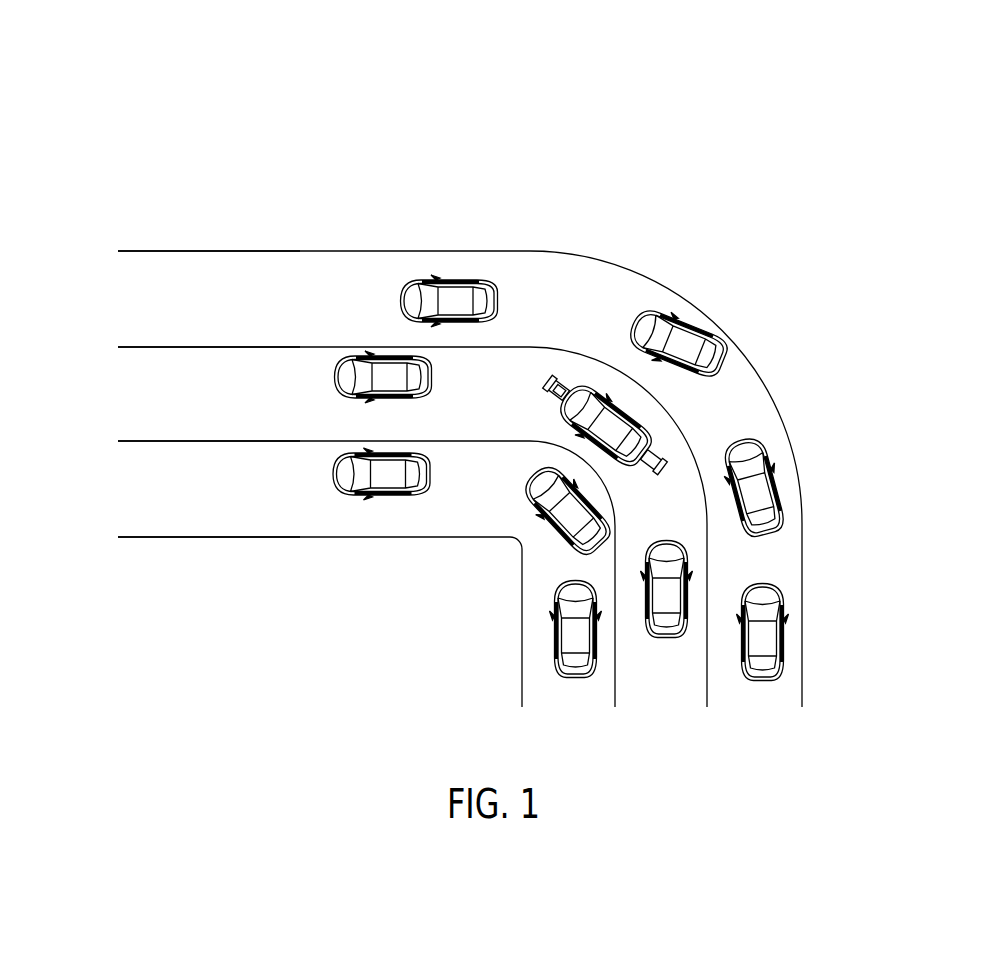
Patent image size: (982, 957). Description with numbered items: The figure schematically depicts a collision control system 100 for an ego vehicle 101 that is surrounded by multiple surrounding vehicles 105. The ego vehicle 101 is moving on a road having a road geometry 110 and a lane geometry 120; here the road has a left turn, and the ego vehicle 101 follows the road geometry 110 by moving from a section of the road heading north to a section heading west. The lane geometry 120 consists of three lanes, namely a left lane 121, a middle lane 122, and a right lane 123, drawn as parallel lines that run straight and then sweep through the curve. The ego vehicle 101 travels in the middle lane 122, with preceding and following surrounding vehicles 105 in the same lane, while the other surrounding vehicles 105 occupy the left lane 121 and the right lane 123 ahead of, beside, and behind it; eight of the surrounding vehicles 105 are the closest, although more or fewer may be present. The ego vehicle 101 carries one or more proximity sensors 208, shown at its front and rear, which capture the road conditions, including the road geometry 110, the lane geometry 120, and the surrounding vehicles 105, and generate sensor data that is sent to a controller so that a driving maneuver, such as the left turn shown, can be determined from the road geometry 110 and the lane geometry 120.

The collision control system 100 is at (774, 108).
The ego vehicle 101 is at (564, 390).
The surrounding vehicles 105 is at (400, 301).
The road geometry 110 is at (779, 330).
The lane geometry 120 is at (97, 357).
The left lane 121 is at (198, 511).
The middle lane 122 is at (195, 411).
The right lane 123 is at (195, 312).
The proximity sensors 208 is at (543, 397).